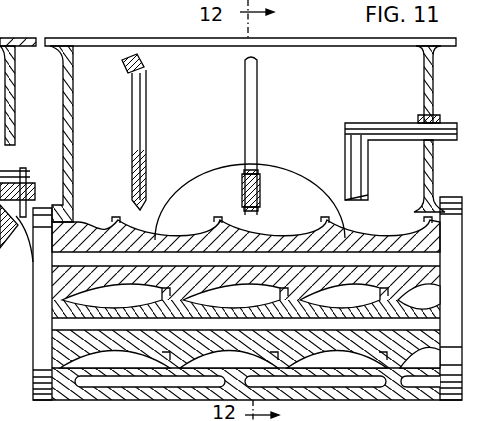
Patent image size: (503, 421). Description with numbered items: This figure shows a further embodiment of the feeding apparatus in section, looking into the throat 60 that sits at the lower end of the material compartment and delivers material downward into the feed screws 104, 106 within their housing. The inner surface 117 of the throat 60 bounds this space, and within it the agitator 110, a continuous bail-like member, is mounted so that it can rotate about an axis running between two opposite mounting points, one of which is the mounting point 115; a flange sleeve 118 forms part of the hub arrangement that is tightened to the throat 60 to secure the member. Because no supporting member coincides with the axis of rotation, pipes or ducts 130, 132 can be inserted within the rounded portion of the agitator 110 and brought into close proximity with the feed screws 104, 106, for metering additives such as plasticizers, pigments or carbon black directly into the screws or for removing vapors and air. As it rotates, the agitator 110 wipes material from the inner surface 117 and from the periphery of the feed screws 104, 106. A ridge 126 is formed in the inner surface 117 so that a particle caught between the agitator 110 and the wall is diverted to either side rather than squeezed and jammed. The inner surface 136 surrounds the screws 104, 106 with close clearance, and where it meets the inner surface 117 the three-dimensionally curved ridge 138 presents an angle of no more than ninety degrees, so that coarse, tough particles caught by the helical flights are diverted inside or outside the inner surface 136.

The throat 60 is at (63, 97).
The inner surface of throat 117 is at (74, 137).
The flange sleeve 118 is at (24, 172).
The mounting point 115 is at (33, 262).
The feed screw 104 is at (52, 279).
The feed screw 106 is at (52, 344).
The inner surface surrounding the screws 136 is at (353, 362).
The duct 132 is at (147, 100).
The agitator 110 is at (258, 90).
The ridge 126 is at (205, 184).
The duct 130 is at (367, 123).
The three-dimensionally curved ridge 138 is at (423, 207).